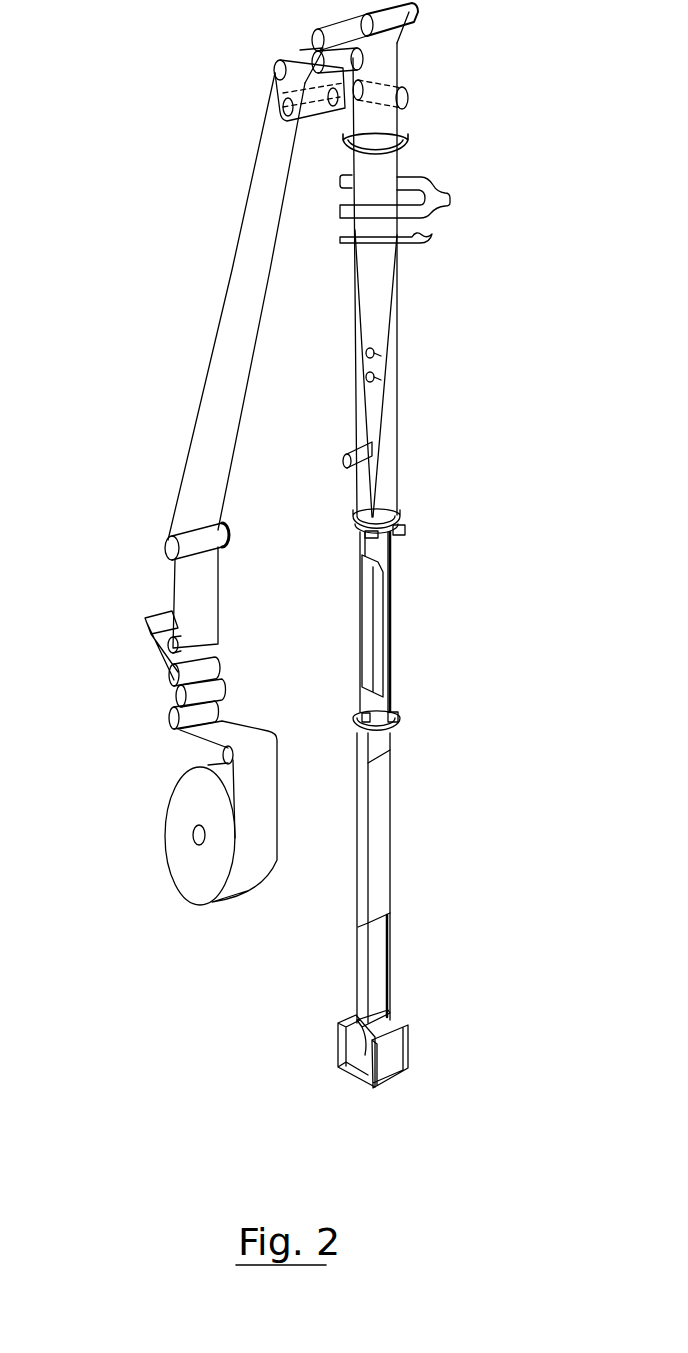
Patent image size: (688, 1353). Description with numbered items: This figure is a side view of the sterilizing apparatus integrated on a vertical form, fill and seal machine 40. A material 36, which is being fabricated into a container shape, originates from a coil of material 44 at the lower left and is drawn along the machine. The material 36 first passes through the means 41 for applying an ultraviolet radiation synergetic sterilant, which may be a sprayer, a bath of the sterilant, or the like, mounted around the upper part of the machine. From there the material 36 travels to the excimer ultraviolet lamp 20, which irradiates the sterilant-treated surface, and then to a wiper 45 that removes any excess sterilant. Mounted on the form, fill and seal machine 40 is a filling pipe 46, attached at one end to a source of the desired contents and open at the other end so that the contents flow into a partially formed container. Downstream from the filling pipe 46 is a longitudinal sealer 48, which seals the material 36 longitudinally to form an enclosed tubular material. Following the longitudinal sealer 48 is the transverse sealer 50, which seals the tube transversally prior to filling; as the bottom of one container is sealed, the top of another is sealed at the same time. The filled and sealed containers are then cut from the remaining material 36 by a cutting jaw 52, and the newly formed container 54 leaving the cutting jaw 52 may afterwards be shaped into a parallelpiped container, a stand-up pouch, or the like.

The material 36 is at (228, 277).
The coil of material 44 is at (172, 788).
The vertical form, fill and seal machine 40 is at (438, 440).
The means for applying a ultraviolet radiation synergetic sterilant 41 is at (407, 143).
The excimer ultraviolet lamp 20 is at (438, 192).
The wiper 45 is at (418, 243).
The filling pipe 46 is at (345, 460).
The longitudinal sealer 48 is at (370, 643).
The transverse sealer 50 is at (387, 1013).
The cutting jaw 52 is at (407, 1047).
The newly formed container 54 is at (348, 1073).